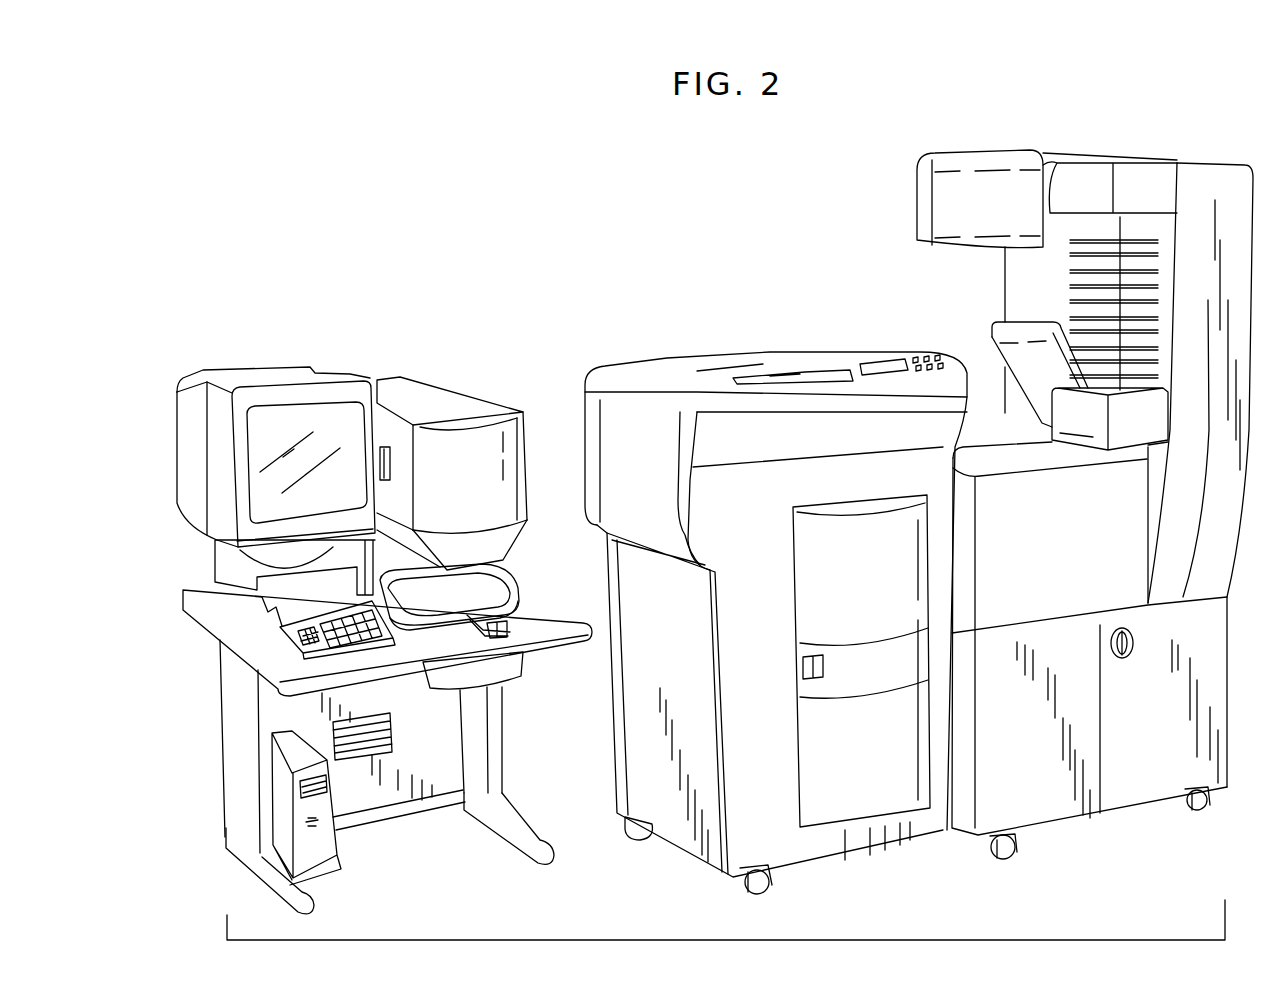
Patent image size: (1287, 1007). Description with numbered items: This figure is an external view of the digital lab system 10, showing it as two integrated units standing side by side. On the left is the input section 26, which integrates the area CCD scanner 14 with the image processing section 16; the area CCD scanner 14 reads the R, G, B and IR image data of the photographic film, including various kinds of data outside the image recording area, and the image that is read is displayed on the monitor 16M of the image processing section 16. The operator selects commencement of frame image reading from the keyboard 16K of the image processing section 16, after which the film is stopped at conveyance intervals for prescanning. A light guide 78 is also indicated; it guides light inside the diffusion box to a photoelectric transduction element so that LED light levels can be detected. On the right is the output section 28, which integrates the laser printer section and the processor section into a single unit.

The digital lab system 10 is at (474, 230).
The area CCD scanner 14 is at (498, 391).
The image processing section 16 is at (342, 838).
The monitor 16M is at (221, 422).
The keyboard 16K is at (292, 625).
The input section 26 is at (256, 344).
The output section 28 is at (728, 280).
The light guide 78 is at (498, 592).